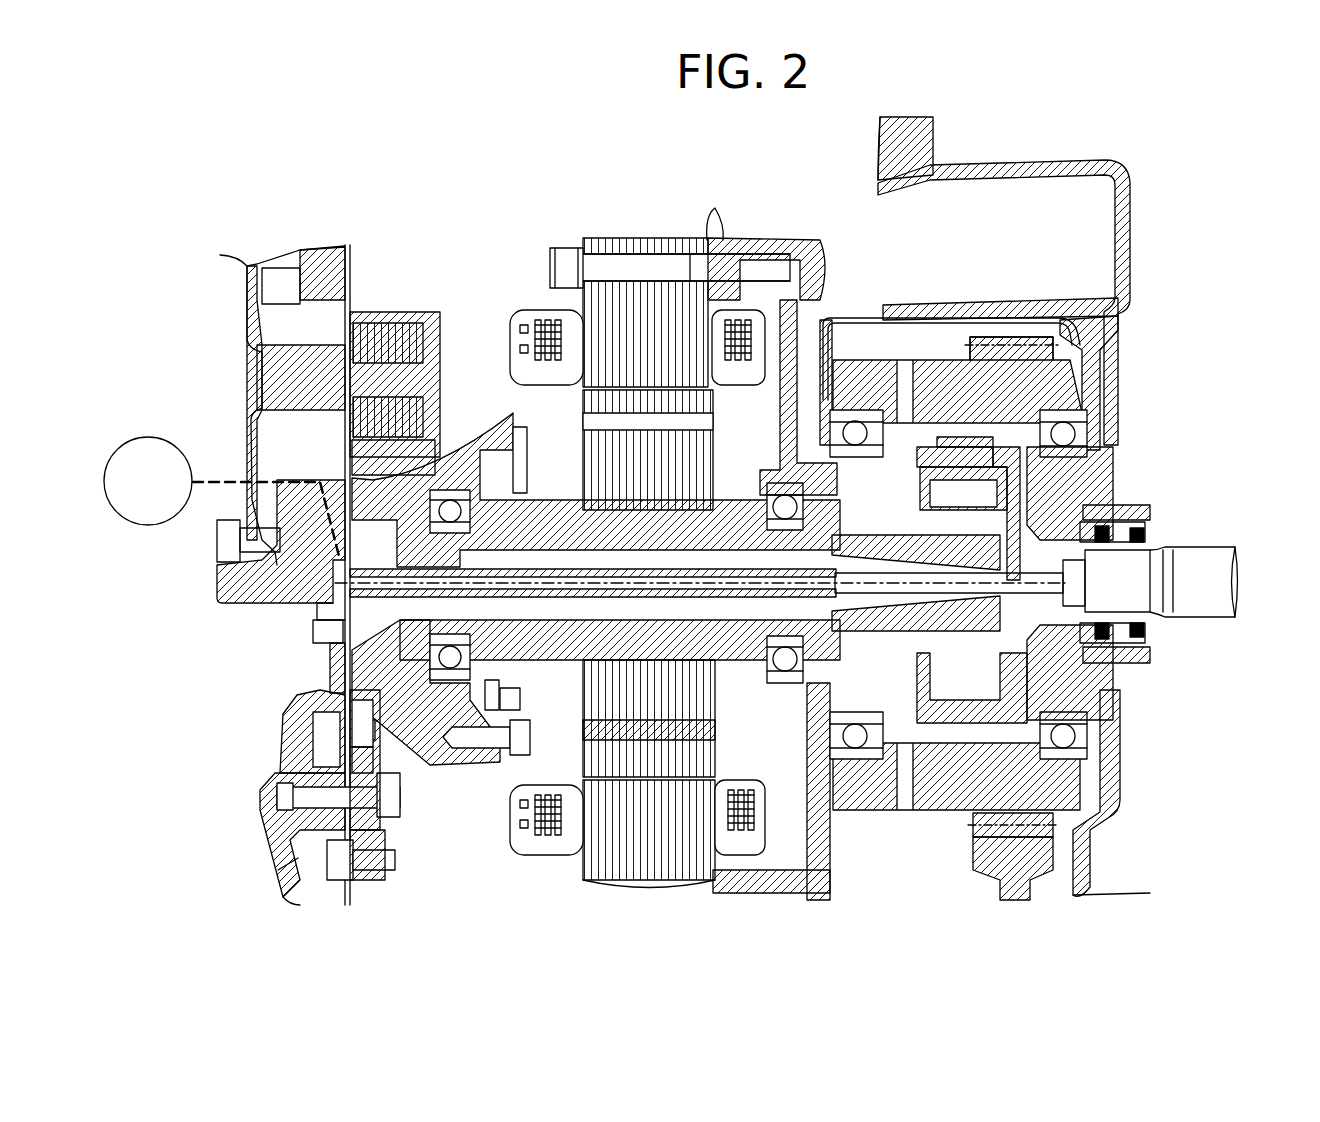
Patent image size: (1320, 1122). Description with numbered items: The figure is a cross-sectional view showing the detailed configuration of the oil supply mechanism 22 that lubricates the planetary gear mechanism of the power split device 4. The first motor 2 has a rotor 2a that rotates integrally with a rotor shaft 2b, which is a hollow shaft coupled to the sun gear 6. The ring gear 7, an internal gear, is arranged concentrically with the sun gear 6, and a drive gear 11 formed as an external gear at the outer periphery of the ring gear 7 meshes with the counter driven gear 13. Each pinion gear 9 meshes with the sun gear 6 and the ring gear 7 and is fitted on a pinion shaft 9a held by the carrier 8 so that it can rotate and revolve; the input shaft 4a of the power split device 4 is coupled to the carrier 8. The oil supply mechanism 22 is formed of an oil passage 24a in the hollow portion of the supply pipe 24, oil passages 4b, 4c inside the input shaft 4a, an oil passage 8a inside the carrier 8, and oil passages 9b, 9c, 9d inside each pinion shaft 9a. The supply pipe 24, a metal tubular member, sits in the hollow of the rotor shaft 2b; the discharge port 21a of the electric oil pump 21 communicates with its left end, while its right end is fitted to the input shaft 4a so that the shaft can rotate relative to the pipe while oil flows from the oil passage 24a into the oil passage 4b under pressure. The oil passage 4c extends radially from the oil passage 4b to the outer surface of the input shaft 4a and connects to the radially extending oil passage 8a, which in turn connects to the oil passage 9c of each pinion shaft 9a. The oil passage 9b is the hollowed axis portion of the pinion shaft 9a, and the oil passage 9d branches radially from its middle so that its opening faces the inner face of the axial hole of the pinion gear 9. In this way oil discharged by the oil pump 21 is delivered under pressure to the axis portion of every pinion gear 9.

The first motor 2 is at (515, 297).
The rotor 2a is at (629, 718).
The rotor shaft 2b is at (545, 515).
The power split device 4 is at (942, 335).
The input shaft 4a is at (1232, 594).
The oil passage 4b is at (884, 640).
The oil passage 4c is at (1085, 583).
The sun gear 6 is at (972, 688).
The ring gear 7 is at (955, 420).
The carrier 8 is at (1112, 495).
The oil passage 8a is at (1092, 553).
The pinion gear 9 is at (912, 540).
The pinion shaft 9a is at (922, 470).
The oil passage 9b is at (1003, 440).
The oil passage 9c is at (1130, 475).
The oil passage 9d is at (960, 490).
The drive gear 11 is at (985, 335).
The counter driven gear 13 is at (1000, 860).
The oil pump 21 is at (151, 440).
The discharge port 21a is at (196, 500).
The oil supply mechanism 22 is at (218, 410).
The supply pipe 24 is at (368, 610).
The oil passage 24a is at (560, 690).